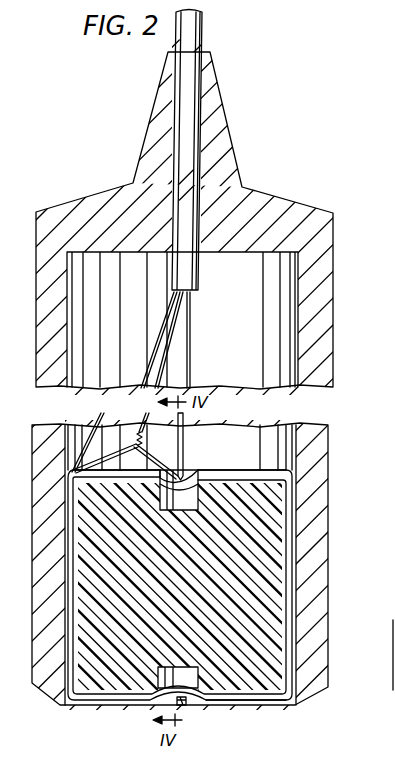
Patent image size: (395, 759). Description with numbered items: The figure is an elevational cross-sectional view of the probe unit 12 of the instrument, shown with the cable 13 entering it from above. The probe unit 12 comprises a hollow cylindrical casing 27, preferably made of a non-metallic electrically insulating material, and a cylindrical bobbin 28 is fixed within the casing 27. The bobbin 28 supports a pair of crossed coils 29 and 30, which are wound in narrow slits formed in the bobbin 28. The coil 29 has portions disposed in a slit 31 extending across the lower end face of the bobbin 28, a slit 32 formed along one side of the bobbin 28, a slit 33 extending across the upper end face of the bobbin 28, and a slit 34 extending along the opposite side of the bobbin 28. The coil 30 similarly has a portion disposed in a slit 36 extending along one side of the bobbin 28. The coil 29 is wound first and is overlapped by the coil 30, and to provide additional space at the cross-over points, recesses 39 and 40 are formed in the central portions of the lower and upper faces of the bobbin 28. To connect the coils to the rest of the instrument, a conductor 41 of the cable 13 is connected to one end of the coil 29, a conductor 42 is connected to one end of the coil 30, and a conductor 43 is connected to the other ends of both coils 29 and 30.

The probe unit 12 is at (258, 196).
The cable 13 is at (190, 31).
The hollow cylindrical casing 27 is at (326, 313).
The cylindrical bobbin 28 is at (275, 551).
The coil 29 is at (284, 583).
The coil 30 is at (184, 470).
The slit 31 is at (258, 706).
The slit 32 is at (65, 607).
The slit 33 is at (249, 470).
The slit 34 is at (291, 527).
The slit 36 is at (394, 636).
The recess 39 is at (160, 684).
The recess 40 is at (188, 479).
The conductor 41 is at (152, 350).
The conductor 42 is at (192, 353).
The conductor 43 is at (175, 335).